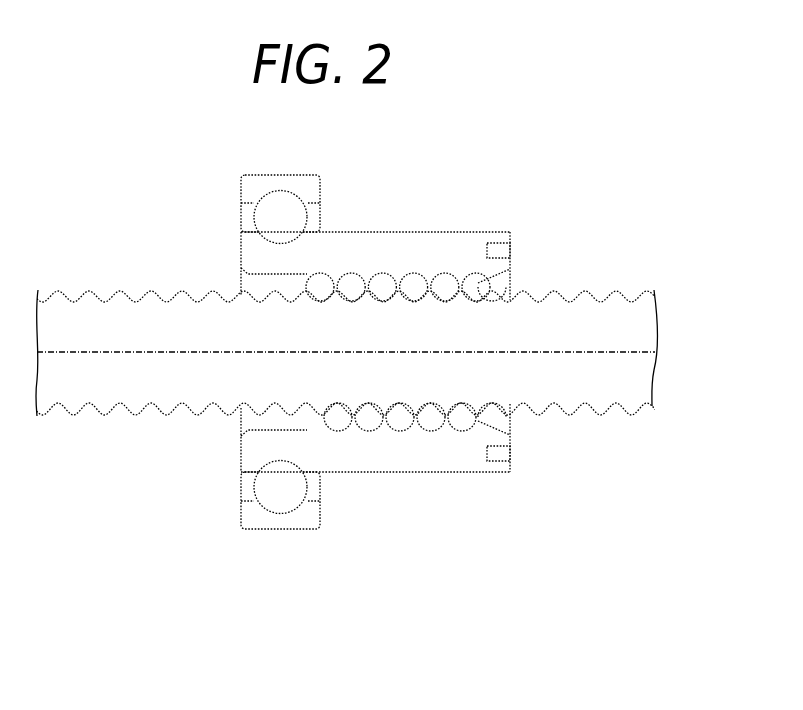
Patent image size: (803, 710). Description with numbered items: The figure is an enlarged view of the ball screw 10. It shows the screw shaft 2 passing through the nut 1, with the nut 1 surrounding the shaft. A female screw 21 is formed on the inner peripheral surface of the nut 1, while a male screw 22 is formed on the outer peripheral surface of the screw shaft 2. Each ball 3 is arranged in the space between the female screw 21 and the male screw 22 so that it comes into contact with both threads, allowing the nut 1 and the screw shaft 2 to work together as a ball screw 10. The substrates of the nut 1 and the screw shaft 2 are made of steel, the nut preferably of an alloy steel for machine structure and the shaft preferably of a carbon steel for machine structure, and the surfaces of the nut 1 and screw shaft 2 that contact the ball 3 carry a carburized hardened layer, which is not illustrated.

The ball screw 10 is at (336, 141).
The nut 1 is at (395, 231).
The screw shaft 2 is at (82, 310).
The ball 3 is at (456, 278).
The female screw 21 is at (472, 280).
The male screw 22 is at (180, 295).